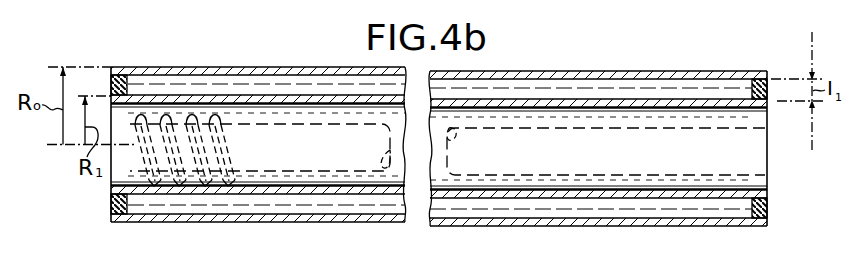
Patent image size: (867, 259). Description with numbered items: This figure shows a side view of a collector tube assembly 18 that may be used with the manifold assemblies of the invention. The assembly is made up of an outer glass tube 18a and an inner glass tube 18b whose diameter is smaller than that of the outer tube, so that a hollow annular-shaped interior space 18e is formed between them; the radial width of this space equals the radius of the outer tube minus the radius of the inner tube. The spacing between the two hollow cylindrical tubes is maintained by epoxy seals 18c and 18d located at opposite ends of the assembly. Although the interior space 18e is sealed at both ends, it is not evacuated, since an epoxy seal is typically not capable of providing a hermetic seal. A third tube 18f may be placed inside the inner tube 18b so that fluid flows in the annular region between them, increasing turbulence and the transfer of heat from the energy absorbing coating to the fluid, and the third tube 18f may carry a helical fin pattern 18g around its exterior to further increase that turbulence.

The collector tube assembly 18 is at (245, 63).
The outer glass tube 18a is at (556, 72).
The inner glass tube 18b is at (570, 198).
The epoxy seal 18c is at (127, 200).
The epoxy seal 18d is at (768, 206).
The hollow interior space 18e is at (637, 95).
The third tube 18f is at (314, 168).
The helical fin pattern 18g is at (240, 187).